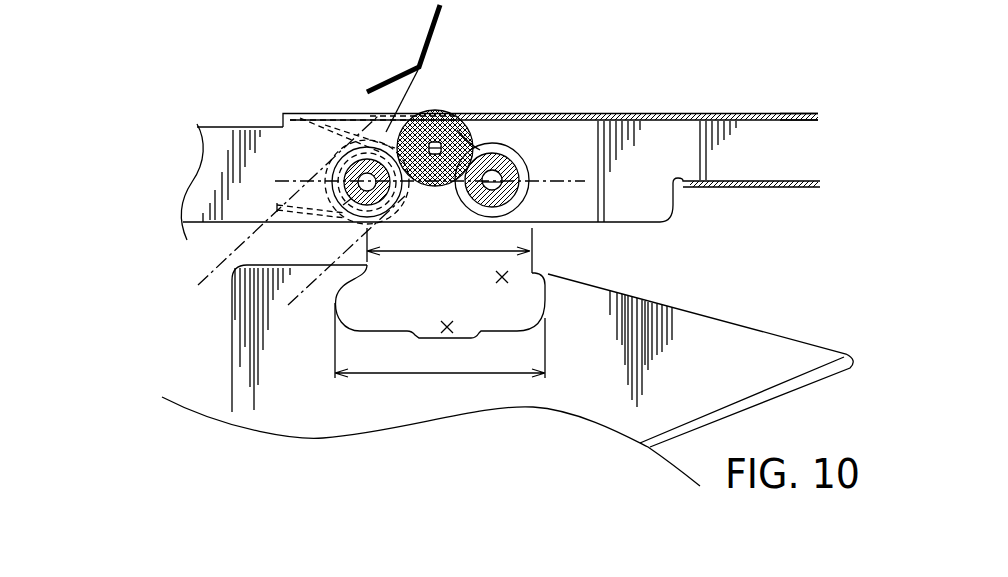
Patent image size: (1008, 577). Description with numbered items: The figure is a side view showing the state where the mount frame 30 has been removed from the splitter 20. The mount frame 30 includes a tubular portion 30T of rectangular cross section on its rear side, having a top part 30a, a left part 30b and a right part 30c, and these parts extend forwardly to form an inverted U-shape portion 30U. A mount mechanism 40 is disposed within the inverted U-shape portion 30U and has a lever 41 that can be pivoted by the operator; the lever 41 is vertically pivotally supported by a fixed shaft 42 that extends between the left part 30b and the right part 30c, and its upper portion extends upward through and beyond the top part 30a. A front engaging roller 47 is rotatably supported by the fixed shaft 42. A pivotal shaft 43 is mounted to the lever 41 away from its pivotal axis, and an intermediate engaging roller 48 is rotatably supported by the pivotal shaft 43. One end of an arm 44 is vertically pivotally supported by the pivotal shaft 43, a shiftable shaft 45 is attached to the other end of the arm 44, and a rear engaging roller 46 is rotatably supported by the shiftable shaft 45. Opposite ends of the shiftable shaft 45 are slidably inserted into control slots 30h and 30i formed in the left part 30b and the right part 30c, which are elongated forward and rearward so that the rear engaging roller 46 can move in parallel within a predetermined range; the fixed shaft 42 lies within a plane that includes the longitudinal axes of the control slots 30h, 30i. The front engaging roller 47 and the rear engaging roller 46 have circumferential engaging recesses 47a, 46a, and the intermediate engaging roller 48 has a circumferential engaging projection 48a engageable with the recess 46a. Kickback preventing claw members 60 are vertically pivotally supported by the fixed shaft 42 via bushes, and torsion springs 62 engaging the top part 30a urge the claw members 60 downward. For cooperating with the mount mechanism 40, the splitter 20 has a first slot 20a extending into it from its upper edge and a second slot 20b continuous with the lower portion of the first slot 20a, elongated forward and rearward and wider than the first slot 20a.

The splitter 20 is at (755, 348).
The first slot 20a is at (508, 277).
The second slot 20b is at (449, 333).
The mount frame 30 is at (742, 94).
The top part 30a is at (635, 117).
The left part 30b is at (369, 181).
The right part 30c is at (200, 173).
The control slot 30h is at (713, 218).
The control slot 30i is at (607, 223).
The tubular portion 30T is at (812, 104).
The inverted U-shape portion 30U is at (583, 95).
The mount mechanism 40 is at (320, 97).
The lever 41 is at (397, 97).
The fixed shaft 42 is at (347, 203).
The pivotal shaft 43 is at (457, 116).
The arm 44 is at (482, 150).
The shiftable shaft 45 is at (510, 196).
The rear engaging roller 46 is at (505, 155).
The circumferential engaging recess 46a is at (490, 188).
The front engaging roller 47 is at (332, 166).
The circumferential engaging recess 47a is at (378, 180).
The intermediate engaging roller 48 is at (433, 117).
The circumferential engaging projection 48a is at (436, 165).
The kickback preventing claw member 60 is at (240, 248).
The torsion spring 62 is at (340, 112).